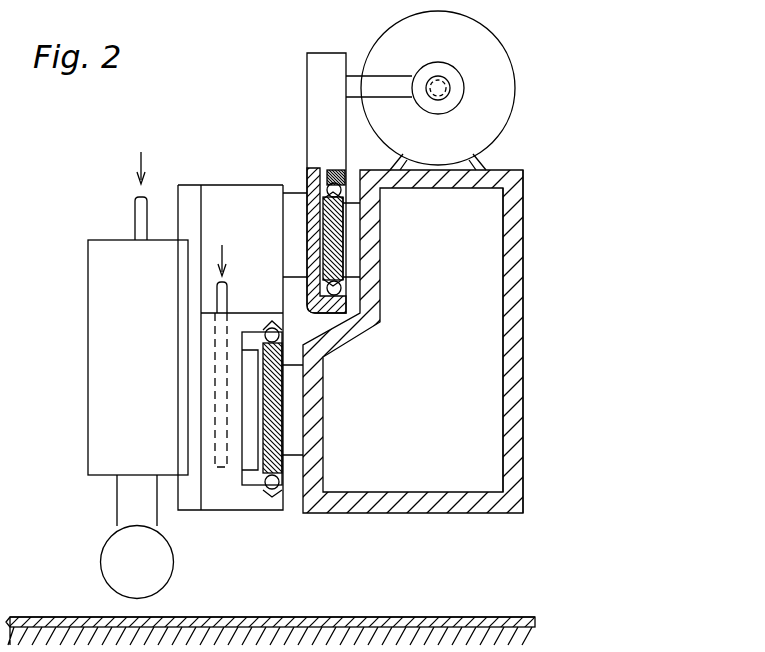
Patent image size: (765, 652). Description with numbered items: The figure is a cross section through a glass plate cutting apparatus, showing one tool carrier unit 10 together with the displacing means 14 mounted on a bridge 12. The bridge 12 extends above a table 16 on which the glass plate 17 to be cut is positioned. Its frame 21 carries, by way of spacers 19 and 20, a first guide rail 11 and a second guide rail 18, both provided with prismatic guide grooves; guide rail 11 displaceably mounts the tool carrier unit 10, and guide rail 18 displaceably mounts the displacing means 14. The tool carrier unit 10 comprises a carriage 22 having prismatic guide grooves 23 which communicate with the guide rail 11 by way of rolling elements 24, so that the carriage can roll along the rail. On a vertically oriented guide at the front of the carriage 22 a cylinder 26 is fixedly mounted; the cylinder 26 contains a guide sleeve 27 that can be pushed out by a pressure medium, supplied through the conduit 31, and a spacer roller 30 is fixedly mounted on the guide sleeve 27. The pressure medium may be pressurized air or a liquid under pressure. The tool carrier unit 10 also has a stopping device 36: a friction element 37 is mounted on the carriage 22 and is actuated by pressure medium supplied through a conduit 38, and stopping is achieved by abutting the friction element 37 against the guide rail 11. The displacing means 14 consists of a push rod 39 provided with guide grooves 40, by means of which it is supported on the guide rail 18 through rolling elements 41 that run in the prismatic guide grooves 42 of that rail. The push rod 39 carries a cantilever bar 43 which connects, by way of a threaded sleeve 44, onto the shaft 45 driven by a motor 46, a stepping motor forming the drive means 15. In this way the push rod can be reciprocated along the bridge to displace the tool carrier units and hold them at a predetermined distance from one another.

The tool carrier unit 10 is at (122, 230).
The guide rail 11 is at (275, 400).
The bridge 12 is at (465, 449).
The displacing means 14 is at (305, 170).
The drive means 15 is at (519, 123).
The table 16 is at (385, 623).
The glass plate 17 is at (335, 616).
The second guide rail 18 is at (338, 252).
The spacer 19 is at (293, 427).
The spacer 20 is at (352, 263).
The frame 21 is at (515, 352).
The carriage 22 is at (213, 503).
The prismatic guide grooves 23 is at (280, 324).
The rolling elements 24 is at (283, 341).
The cylinder 26 is at (100, 328).
The guide sleeve 27 is at (128, 500).
The spacer roller 30 is at (110, 563).
The conduit 31 is at (142, 218).
The stopping device 36 is at (232, 402).
The friction element 37 is at (248, 425).
The conduit 38 is at (223, 298).
The push rod 39 is at (306, 186).
The guide grooves 40 is at (336, 180).
The rolling elements 41 is at (328, 168).
The prismatic guide grooves 42 is at (340, 206).
The cantilever bar 43 is at (386, 84).
The threaded sleeve 44 is at (450, 103).
The shaft 45 is at (450, 86).
The motor 46 is at (490, 46).